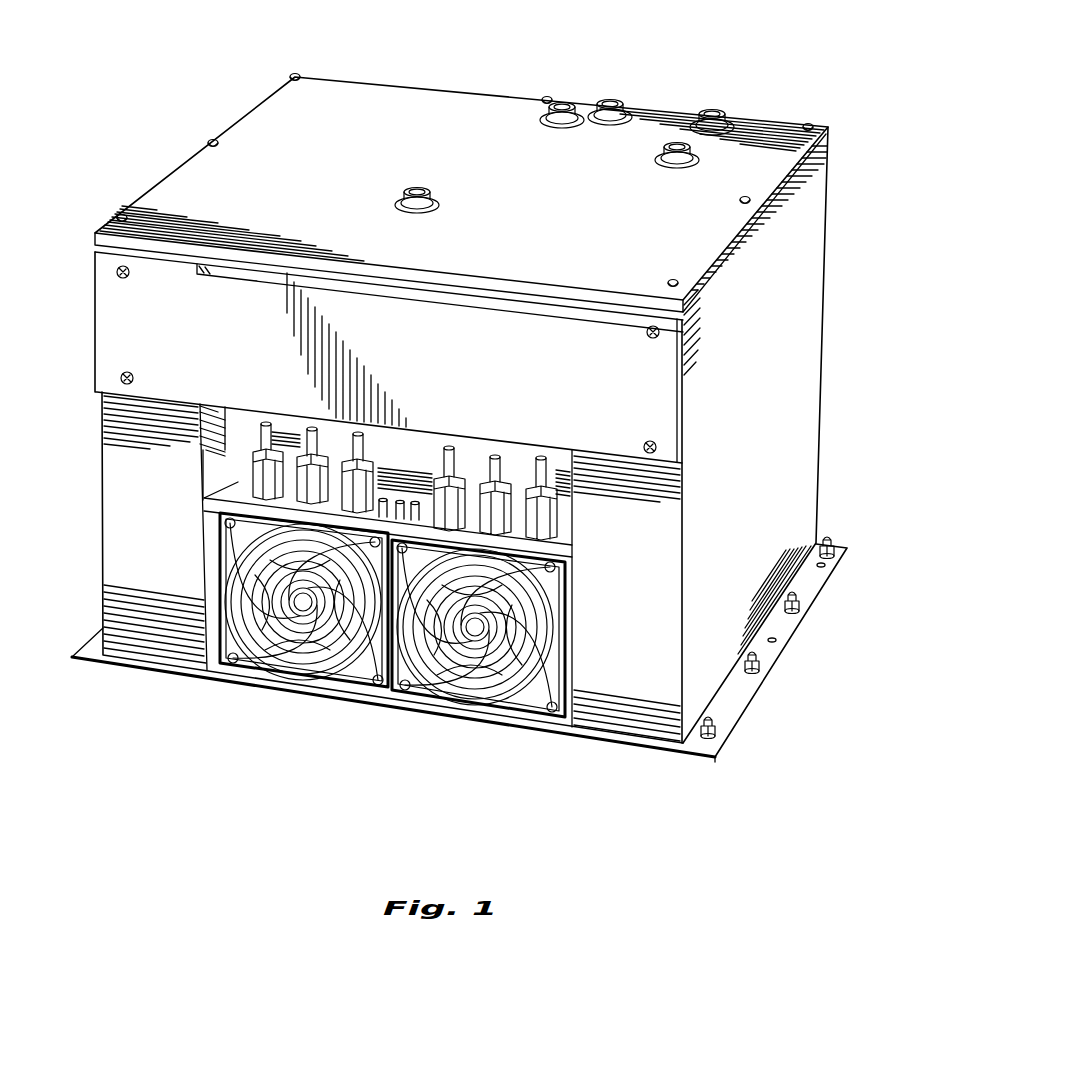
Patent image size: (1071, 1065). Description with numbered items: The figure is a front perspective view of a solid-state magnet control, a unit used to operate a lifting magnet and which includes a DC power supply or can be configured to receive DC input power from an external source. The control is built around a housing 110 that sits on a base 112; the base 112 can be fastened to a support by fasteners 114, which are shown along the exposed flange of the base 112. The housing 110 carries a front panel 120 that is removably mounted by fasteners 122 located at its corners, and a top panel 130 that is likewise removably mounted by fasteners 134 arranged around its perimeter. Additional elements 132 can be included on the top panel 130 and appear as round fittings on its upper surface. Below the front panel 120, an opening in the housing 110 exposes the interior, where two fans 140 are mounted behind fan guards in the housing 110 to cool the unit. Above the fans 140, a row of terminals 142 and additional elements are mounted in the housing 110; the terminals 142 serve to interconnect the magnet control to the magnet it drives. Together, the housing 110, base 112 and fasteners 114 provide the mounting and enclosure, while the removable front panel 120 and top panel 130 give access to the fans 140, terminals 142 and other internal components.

The housing 110 is at (826, 342).
The base 112 is at (307, 698).
The fasteners 114 is at (836, 548).
The front panel 120 is at (423, 358).
The fasteners 122 is at (128, 277).
The top panel 130 is at (577, 213).
The additional elements 132 is at (417, 190).
The fasteners 134 is at (295, 75).
The fans 140 is at (222, 598).
The terminals 142 is at (253, 465).